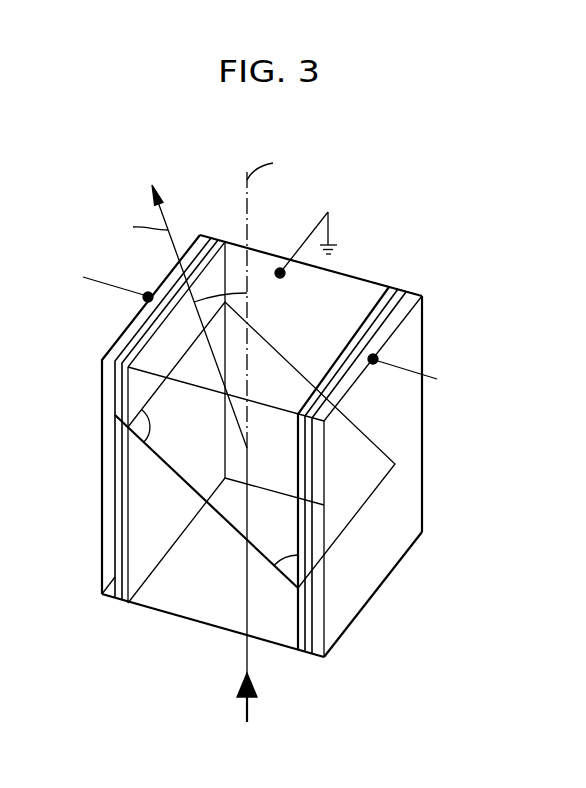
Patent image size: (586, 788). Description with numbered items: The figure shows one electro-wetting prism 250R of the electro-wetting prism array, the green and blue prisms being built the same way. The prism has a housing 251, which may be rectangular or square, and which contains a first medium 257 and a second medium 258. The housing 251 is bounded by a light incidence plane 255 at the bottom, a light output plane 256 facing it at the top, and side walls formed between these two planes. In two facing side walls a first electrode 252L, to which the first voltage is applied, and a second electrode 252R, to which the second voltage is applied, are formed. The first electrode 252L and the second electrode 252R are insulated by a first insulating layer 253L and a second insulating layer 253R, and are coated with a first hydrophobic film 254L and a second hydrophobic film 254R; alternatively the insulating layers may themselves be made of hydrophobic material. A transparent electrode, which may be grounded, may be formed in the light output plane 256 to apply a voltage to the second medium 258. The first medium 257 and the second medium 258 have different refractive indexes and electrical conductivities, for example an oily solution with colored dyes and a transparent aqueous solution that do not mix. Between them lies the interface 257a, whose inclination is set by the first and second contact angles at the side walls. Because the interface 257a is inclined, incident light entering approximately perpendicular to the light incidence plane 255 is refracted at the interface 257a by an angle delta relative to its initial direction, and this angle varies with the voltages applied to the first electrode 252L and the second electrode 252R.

The electro-wetting prism 250R is at (528, 165).
The housing 251 is at (437, 456).
The first electrode 252L is at (140, 310).
The first insulating layer 253L is at (140, 331).
The first hydrophobic film 254L is at (132, 354).
The second electrode 252R is at (411, 294).
The second insulating layer 253R is at (398, 290).
The second hydrophobic film 254R is at (386, 290).
The light incidence plane 255 is at (278, 633).
The light output plane 256 is at (268, 254).
The first medium 257 is at (218, 598).
The interface 257a is at (207, 498).
The second medium 258 is at (275, 477).